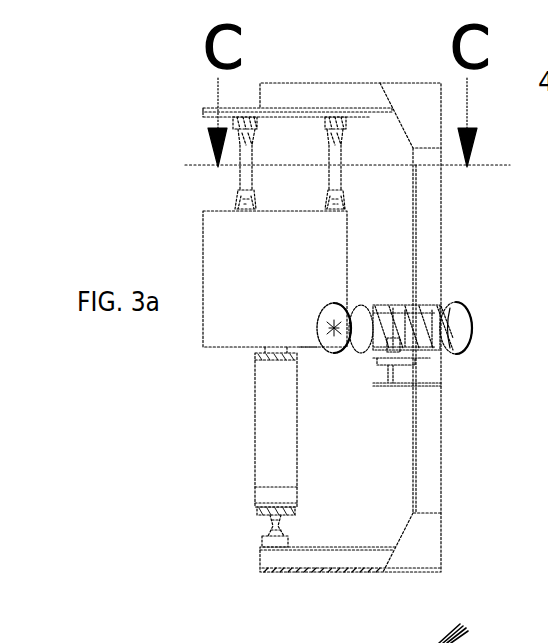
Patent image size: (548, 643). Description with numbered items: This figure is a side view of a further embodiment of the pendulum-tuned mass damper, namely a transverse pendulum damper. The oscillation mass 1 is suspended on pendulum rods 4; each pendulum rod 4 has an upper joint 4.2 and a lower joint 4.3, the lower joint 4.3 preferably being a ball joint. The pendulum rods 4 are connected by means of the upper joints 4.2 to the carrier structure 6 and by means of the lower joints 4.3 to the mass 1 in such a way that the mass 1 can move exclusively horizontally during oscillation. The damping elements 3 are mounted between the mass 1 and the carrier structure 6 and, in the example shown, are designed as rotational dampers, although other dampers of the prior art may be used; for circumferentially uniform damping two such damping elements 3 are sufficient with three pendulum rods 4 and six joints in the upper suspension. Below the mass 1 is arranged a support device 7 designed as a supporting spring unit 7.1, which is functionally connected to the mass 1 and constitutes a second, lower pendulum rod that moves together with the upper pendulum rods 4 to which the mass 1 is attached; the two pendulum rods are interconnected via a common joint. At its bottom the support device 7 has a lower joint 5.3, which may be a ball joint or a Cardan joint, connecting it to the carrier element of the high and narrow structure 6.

The oscillation mass 1 is at (232, 263).
The damping element 3 is at (447, 305).
The pendulum rod 4 is at (337, 123).
The upper joint 4.2 is at (330, 123).
The lower joint 4.3 is at (327, 201).
The lower joint 5.3 is at (265, 538).
The carrier structure 6 is at (442, 215).
The support device 7 is at (262, 440).
The supporting spring unit 7.1 is at (265, 500).